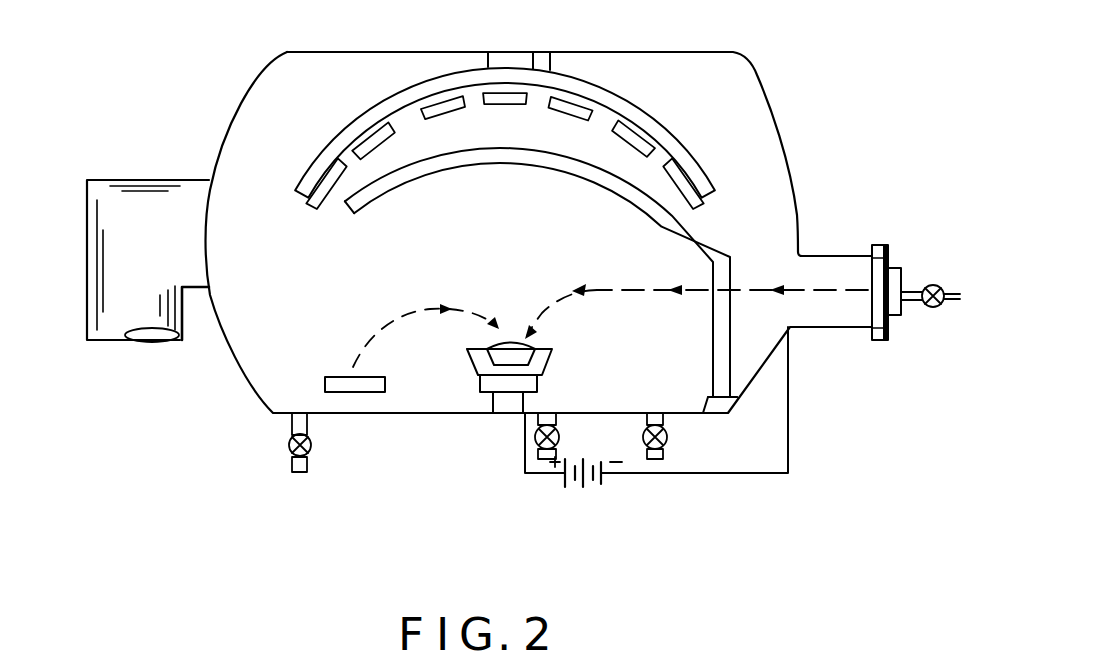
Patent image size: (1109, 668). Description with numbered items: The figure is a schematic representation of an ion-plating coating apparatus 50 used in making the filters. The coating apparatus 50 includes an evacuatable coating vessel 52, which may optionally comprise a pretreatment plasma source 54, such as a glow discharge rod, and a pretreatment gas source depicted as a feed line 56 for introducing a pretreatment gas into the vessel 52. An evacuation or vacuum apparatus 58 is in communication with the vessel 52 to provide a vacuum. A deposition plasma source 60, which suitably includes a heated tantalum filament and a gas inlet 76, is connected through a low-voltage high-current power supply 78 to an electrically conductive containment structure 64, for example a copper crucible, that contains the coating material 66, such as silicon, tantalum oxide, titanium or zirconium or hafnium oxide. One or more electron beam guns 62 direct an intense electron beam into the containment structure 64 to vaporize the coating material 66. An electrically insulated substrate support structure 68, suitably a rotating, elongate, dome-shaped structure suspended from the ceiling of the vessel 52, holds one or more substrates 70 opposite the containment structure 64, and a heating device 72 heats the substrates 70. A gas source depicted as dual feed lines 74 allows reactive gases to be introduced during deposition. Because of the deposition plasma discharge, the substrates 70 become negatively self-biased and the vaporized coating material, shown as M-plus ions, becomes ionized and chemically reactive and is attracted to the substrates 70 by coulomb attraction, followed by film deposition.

The coating apparatus 50 is at (850, 88).
The coating vessel 52 is at (384, 52).
The pretreatment plasma source 54 is at (700, 223).
The feed line 56 is at (538, 452).
The vacuum apparatus 58 is at (158, 343).
The deposition plasma source 60 is at (880, 244).
The electron beam guns 62 is at (897, 316).
The containment structure 64 is at (538, 358).
The coating material 66 is at (525, 351).
The substrate support structure 68 is at (580, 85).
The substrates 70 is at (378, 133).
The heating device 72 is at (551, 69).
The dual feed lines 74 is at (302, 475).
The gas inlet 76 is at (960, 298).
The power supply 78 is at (591, 495).